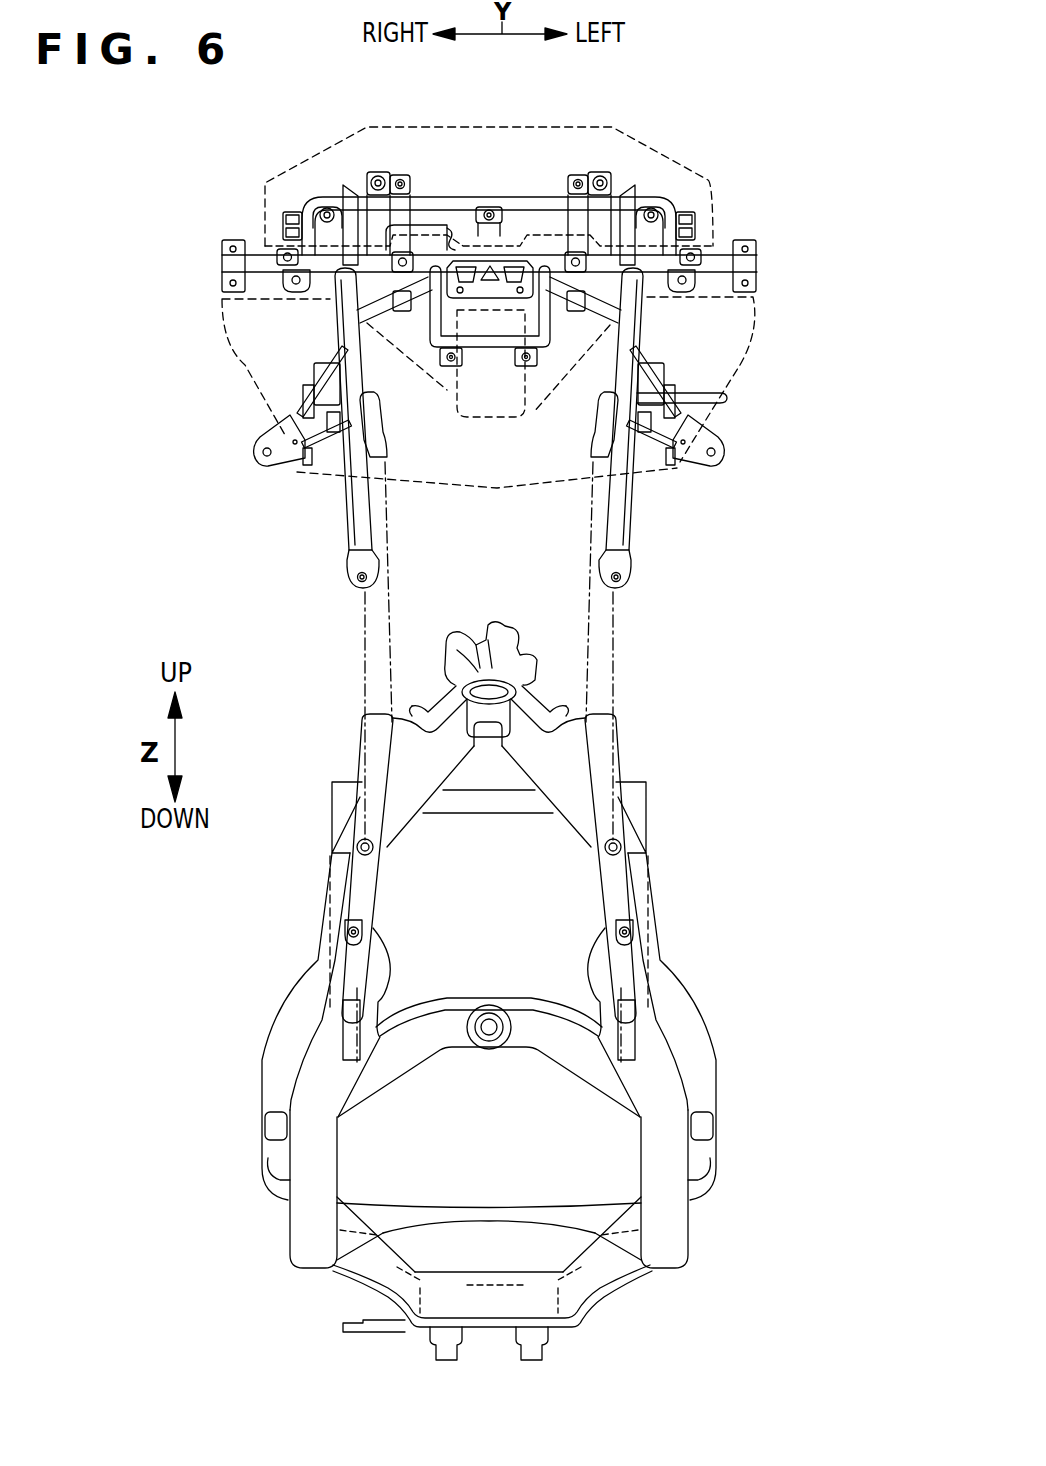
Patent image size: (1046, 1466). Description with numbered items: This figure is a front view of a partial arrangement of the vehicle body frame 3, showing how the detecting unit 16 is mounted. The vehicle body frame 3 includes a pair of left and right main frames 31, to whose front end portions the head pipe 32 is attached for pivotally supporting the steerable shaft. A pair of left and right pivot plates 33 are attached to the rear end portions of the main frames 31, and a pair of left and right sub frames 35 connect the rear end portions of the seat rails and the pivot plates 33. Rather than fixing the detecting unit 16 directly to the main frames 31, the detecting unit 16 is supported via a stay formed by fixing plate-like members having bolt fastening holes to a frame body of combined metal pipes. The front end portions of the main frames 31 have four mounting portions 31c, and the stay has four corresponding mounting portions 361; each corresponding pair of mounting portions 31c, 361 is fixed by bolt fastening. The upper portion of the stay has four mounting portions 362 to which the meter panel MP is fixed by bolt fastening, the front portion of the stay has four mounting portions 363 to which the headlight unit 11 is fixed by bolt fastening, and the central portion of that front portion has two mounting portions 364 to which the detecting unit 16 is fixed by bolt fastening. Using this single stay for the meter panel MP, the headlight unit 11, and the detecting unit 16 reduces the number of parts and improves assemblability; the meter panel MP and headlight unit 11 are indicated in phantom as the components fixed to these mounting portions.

The vehicle body frame 3 is at (810, 1225).
The headlight unit 11 is at (760, 321).
The detecting unit 16 is at (497, 420).
The main frames 31 is at (355, 762).
The mounting portions 31c is at (390, 718).
The head pipe 32 is at (480, 632).
The pivot plates 33 is at (287, 1188).
The sub frames 35 is at (270, 1058).
The mounting portions 361 is at (382, 465).
The mounting portions 362 is at (326, 207).
The mounting portions 363 is at (294, 293).
The mounting portions 364 is at (450, 367).
The meter panel MP is at (712, 178).